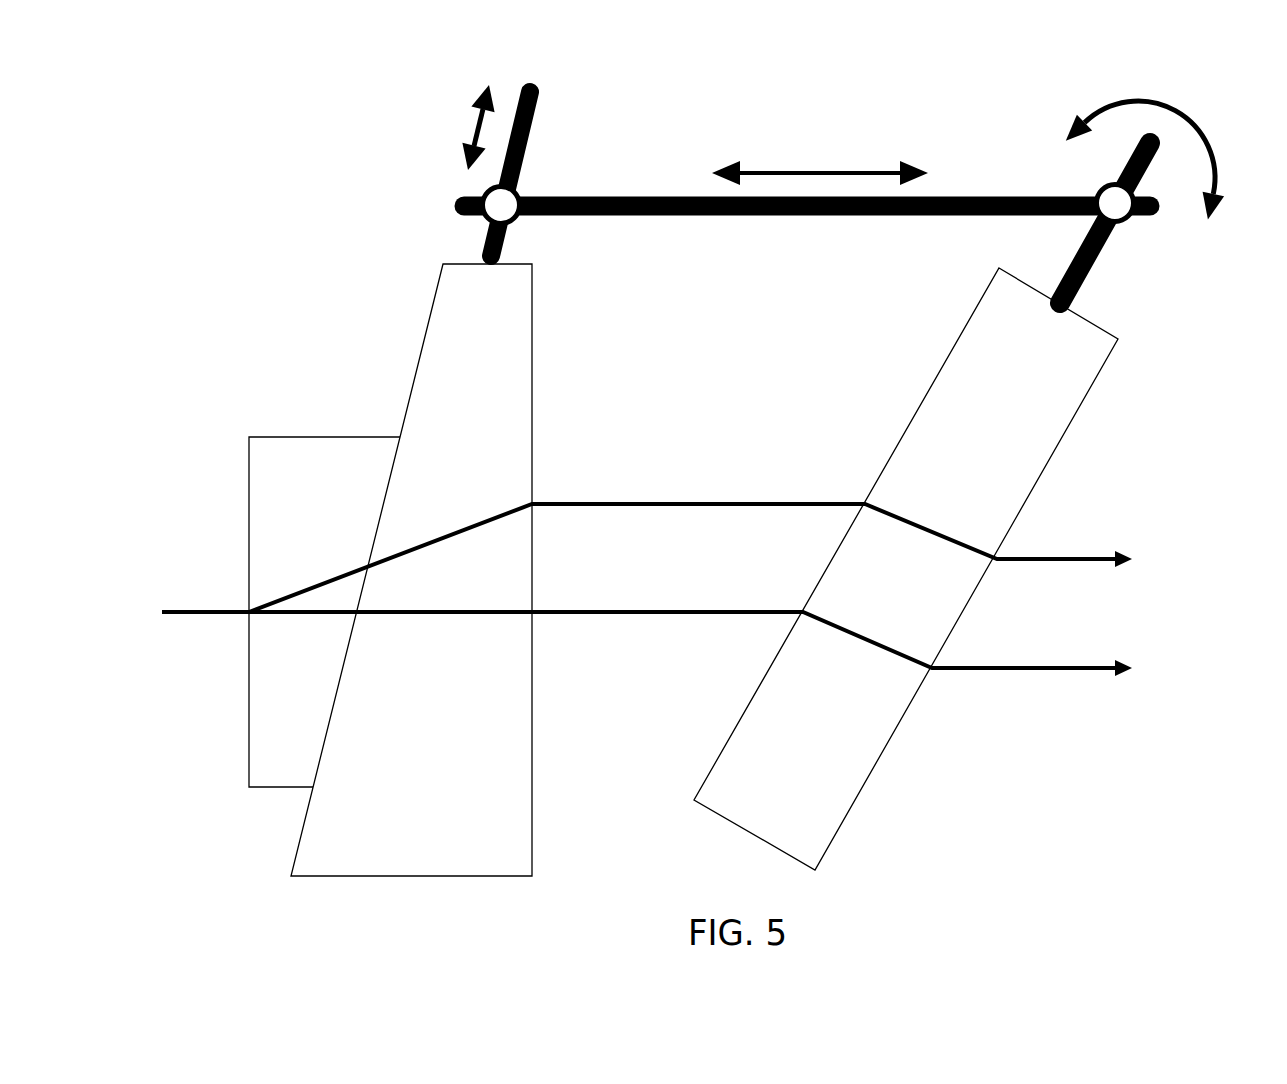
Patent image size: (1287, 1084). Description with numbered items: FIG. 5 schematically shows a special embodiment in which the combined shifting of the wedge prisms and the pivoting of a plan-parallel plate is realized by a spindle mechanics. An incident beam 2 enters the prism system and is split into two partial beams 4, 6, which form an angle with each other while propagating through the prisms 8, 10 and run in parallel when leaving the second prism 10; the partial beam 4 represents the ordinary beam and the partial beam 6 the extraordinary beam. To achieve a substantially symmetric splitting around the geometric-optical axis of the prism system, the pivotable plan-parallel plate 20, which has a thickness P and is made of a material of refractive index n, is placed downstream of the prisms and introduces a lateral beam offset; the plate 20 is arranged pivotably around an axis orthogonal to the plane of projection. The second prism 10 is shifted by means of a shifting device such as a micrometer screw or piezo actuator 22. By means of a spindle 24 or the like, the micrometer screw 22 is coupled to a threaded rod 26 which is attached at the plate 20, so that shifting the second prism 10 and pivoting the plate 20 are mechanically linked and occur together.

The incident beam 2 is at (222, 610).
The partial beam 4 is at (617, 613).
The partial beam 6 is at (655, 502).
The prism 8 is at (316, 457).
The second prism 10 is at (511, 395).
The plan-parallel plate 20 is at (1057, 401).
The micrometer screw 22 is at (525, 148).
The spindle 24 is at (778, 215).
The threaded rod 26 is at (1098, 258).